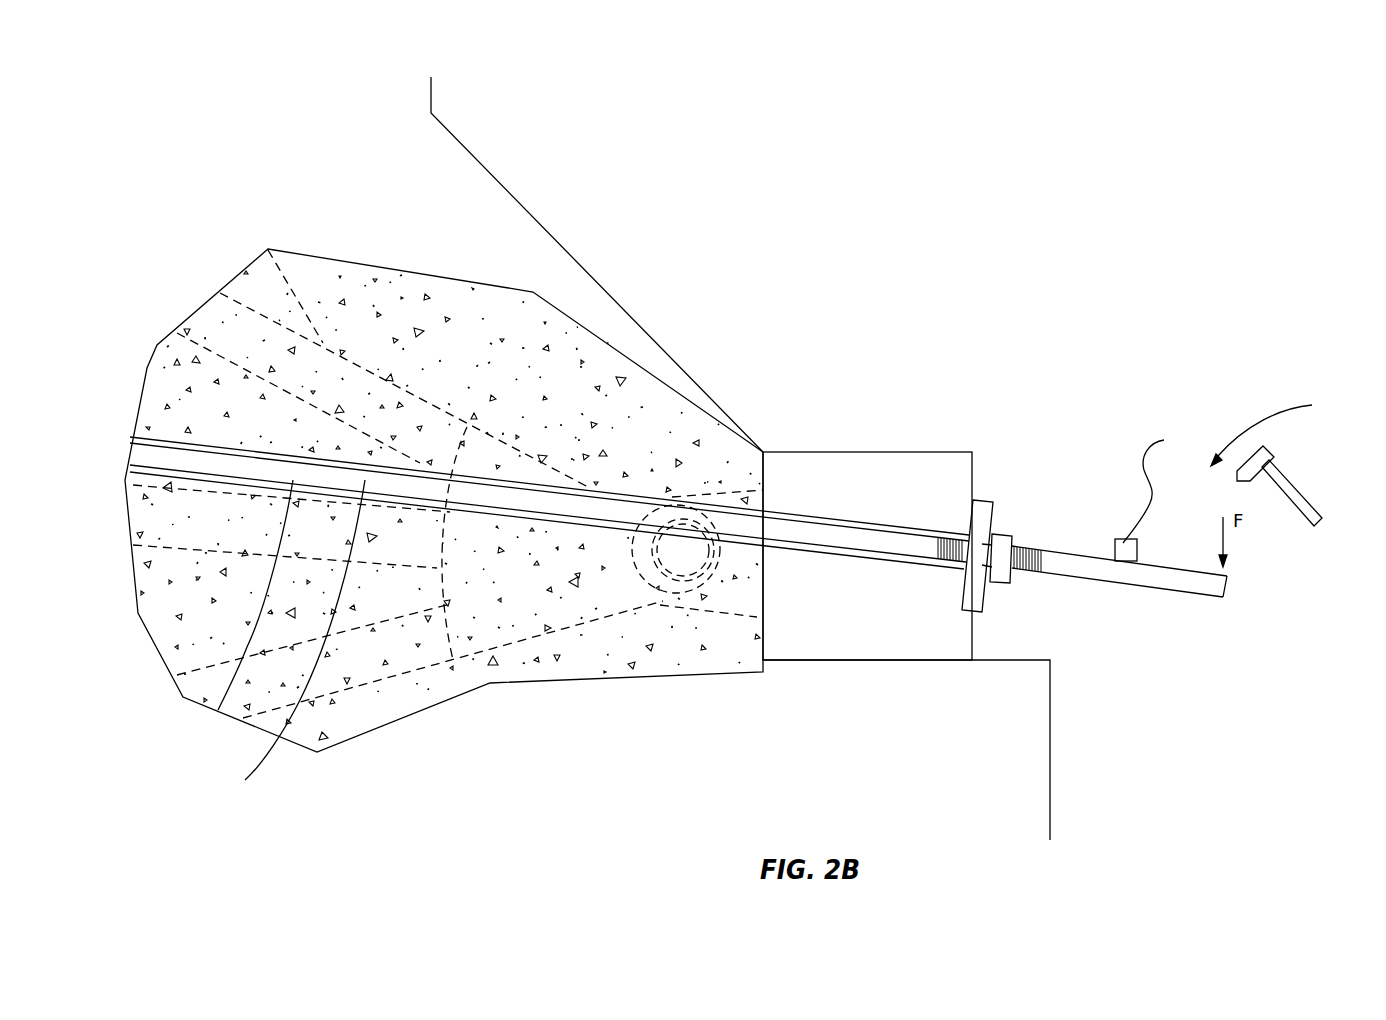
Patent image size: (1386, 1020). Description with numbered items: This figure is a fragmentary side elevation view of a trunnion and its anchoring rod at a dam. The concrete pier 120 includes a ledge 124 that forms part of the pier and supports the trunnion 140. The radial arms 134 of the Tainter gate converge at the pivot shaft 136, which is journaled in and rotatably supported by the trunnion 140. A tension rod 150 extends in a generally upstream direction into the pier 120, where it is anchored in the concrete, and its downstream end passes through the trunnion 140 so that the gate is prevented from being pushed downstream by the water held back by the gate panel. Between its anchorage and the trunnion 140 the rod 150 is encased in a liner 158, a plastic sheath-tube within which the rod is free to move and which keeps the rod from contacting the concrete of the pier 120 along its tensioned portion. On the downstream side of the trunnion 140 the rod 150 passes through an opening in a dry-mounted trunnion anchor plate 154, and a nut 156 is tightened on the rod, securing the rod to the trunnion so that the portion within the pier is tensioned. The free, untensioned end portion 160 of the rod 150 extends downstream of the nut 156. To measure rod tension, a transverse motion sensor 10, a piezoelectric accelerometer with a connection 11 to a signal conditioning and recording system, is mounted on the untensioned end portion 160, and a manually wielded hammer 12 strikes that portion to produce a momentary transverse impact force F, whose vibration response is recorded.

The transverse motion sensor 10 is at (1138, 552).
The connection 11 is at (1157, 487).
The hammer 12 is at (1303, 497).
The pier 120 is at (380, 177).
The ledge 124 is at (1013, 657).
The radial arm 134 is at (268, 250).
The pivot shaft 136 is at (712, 565).
The trunnion 140 is at (937, 450).
The tension rod 150 is at (245, 780).
The trunnion anchor plate 154 is at (990, 498).
The nut 156 is at (1008, 531).
The liner 158 is at (218, 710).
The untensioned end portion 160 is at (1138, 576).